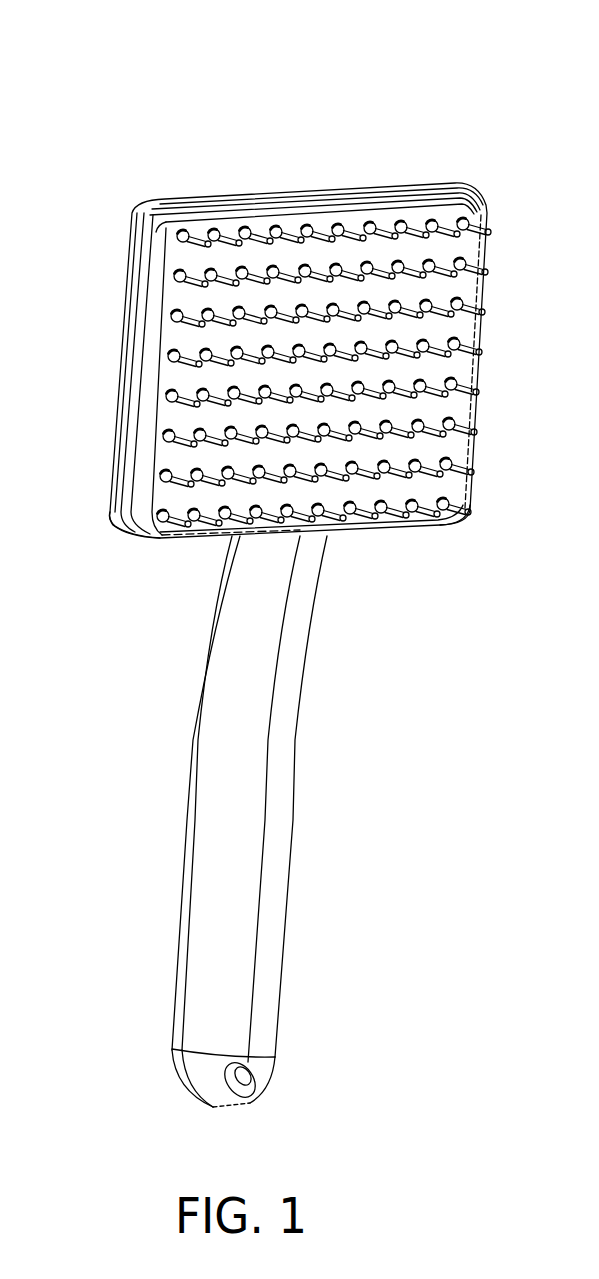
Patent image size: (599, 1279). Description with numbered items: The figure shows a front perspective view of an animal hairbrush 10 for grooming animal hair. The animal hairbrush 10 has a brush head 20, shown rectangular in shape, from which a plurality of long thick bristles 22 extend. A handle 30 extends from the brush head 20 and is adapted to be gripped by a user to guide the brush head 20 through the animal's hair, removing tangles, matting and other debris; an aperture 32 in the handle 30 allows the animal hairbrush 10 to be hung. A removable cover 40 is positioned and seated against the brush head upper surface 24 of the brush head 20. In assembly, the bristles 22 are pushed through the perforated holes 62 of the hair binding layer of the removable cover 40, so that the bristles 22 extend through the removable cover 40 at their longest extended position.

The animal hairbrush 10 is at (510, 72).
The brush head 20 is at (406, 192).
The bristles 22 is at (489, 273).
The brush head upper surface 24 is at (140, 367).
The handle 30 is at (285, 830).
The aperture 32 is at (255, 1081).
The removable cover 40 is at (452, 517).
The perforated holes 62 is at (160, 540).